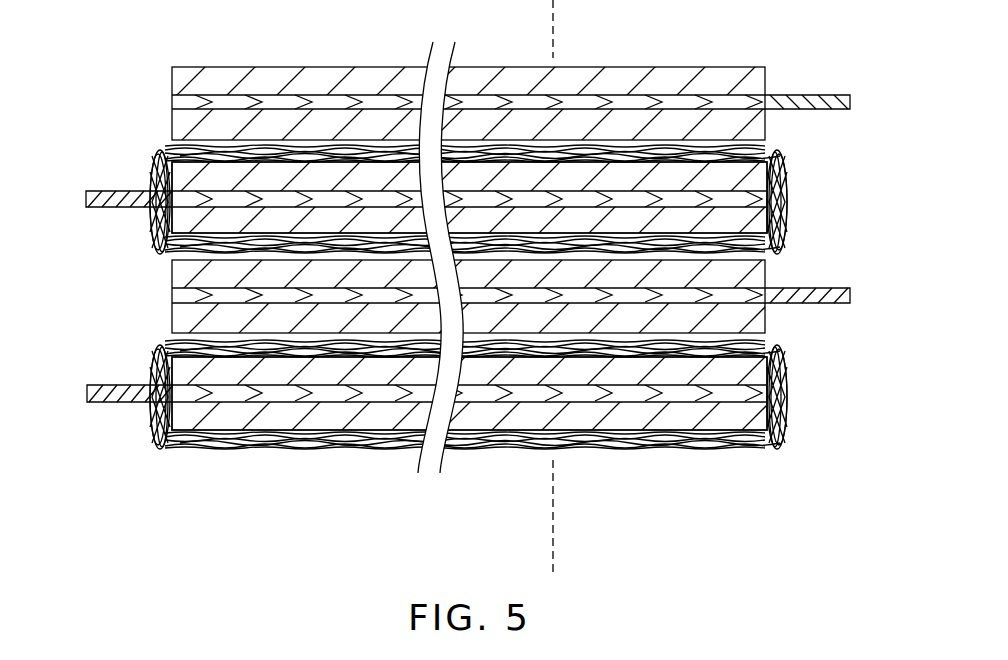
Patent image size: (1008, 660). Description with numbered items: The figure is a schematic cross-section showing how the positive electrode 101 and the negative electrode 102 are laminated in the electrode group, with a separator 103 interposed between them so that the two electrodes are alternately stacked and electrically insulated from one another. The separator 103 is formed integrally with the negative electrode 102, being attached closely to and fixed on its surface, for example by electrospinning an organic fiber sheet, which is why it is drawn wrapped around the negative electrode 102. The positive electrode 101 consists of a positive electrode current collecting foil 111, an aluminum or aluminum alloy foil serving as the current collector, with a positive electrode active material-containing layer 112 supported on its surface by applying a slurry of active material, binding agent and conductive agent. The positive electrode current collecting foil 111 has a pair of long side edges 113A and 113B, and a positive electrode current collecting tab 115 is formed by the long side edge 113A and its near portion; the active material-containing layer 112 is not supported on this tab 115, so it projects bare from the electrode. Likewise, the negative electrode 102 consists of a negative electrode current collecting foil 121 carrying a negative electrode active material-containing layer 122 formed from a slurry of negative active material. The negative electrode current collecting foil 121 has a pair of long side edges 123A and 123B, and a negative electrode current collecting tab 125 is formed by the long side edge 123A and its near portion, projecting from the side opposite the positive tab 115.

The positive electrode 101 is at (618, 67).
The negative electrode 102 is at (737, 220).
The separator 103 is at (670, 150).
The positive electrode current collecting foil 111 is at (500, 96).
The positive electrode active material-containing layer 112 is at (303, 76).
The long side edge 113A is at (852, 102).
The long side edge 113B is at (172, 102).
The positive electrode current collecting tab 115 is at (800, 97).
The negative electrode current collecting foil 121 is at (557, 191).
The negative electrode active material-containing layer 122 is at (197, 220).
The long side edge 123A is at (86, 201).
The long side edge 123B is at (770, 200).
The negative electrode current collecting tab 125 is at (110, 194).